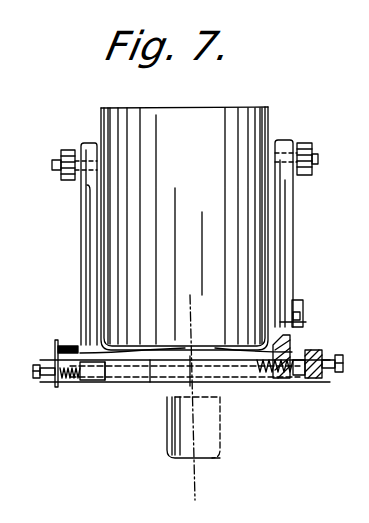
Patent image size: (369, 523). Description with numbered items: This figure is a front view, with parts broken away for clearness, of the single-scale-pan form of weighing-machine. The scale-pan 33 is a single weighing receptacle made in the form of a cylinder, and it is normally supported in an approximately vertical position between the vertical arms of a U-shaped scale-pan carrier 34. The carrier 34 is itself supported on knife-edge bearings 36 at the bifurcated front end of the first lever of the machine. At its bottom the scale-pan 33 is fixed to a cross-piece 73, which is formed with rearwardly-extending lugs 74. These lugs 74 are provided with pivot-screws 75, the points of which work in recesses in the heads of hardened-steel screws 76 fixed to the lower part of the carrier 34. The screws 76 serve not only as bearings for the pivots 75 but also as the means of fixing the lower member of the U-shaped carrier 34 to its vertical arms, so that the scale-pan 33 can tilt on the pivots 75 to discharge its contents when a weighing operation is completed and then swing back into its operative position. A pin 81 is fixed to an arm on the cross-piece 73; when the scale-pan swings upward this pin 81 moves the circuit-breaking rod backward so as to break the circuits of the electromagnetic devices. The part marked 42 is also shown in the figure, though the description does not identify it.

The scale-pan 33 is at (184, 228).
The U-shaped scale-pan carrier 34 is at (82, 268).
The knife-edge bearings 36 is at (56, 172).
The stop 42 is at (301, 318).
The cross-piece 73 is at (150, 386).
The rearwardly-extending lugs 74 is at (74, 385).
The pivot-screws 75 is at (36, 365).
The hardened-steel screws 76 is at (86, 381).
The pin 81 is at (66, 345).